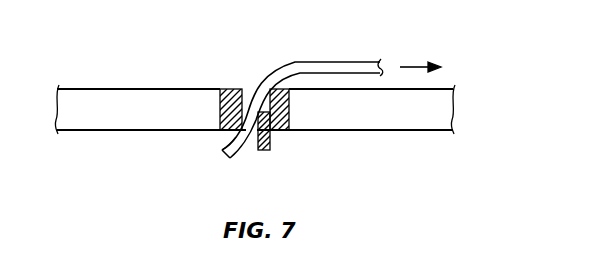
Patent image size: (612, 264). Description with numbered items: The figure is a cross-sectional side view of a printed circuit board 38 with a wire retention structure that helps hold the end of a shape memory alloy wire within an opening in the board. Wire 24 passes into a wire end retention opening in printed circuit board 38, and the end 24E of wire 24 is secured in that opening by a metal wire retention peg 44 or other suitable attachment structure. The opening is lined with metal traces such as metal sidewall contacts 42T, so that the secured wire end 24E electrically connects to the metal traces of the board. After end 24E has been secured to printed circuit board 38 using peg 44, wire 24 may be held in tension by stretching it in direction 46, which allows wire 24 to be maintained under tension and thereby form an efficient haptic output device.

The wire 24 is at (347, 61).
The end of wire 24E is at (232, 157).
The printed circuit board 38 is at (401, 123).
The metal sidewall contacts 42T is at (236, 90).
The metal wire retention peg 44 is at (262, 150).
The direction 46 is at (418, 64).